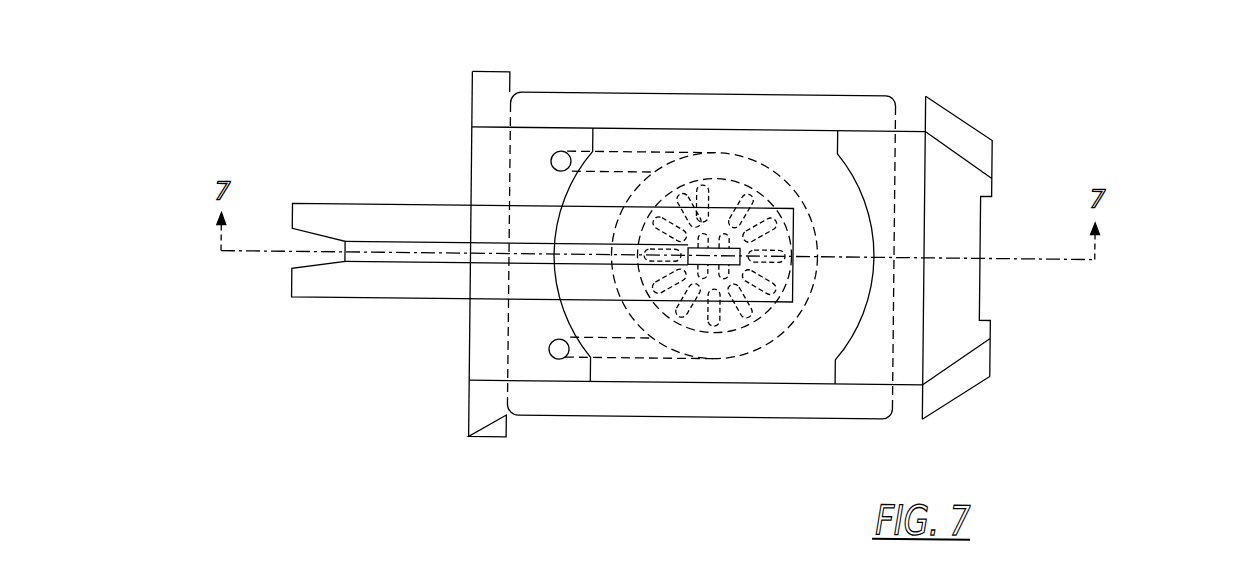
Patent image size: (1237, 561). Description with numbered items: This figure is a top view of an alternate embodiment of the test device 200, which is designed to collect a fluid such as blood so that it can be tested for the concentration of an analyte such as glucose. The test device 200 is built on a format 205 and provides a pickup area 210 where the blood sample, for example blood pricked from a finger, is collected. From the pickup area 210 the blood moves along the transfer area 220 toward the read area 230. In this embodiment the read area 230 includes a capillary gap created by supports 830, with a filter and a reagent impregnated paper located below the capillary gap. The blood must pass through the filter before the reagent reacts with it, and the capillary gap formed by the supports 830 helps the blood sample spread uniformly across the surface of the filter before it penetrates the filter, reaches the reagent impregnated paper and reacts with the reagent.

The test device 200 is at (830, 257).
The format 205 is at (957, 125).
The pickup area 210 is at (373, 251).
The transfer area 220 is at (691, 248).
The read area 230 is at (736, 185).
The supports 830 is at (705, 272).